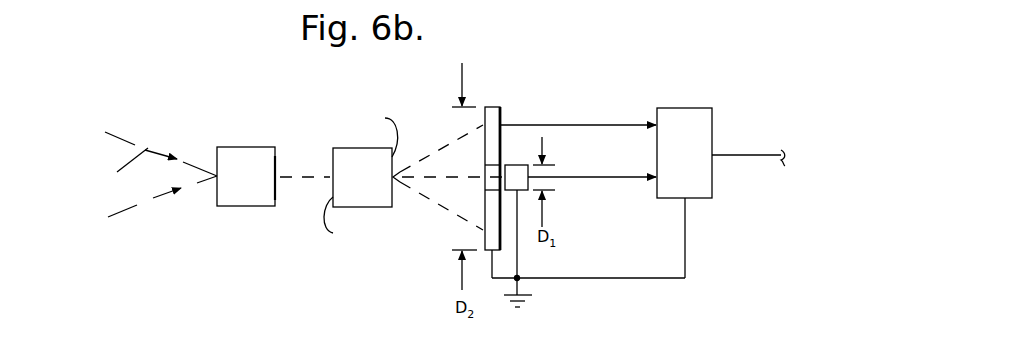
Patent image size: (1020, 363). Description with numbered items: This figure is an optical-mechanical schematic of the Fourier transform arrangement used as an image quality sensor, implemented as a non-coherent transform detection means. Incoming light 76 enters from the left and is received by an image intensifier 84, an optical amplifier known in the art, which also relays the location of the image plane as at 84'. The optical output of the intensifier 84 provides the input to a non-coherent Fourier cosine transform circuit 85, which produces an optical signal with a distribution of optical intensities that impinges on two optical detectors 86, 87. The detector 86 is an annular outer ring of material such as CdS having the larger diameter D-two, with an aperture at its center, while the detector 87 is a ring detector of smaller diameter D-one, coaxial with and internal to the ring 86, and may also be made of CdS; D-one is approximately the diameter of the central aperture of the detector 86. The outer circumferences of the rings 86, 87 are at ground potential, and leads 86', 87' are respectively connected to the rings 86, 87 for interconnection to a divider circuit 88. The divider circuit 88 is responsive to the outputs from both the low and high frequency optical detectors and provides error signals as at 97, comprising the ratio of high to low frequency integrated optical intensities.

The input light beam 76 is at (131, 205).
The image intensifier 84 is at (228, 194).
The image plane location 84' is at (270, 157).
The non-coherent Fourier cosine transform circuit 85 is at (377, 188).
The low frequency detector 86 is at (508, 169).
The lead 86' is at (578, 109).
The high spatial frequency detector 87 is at (515, 161).
The lead 87' is at (592, 202).
The divider circuit 88 is at (700, 117).
The error signals 97 is at (747, 152).